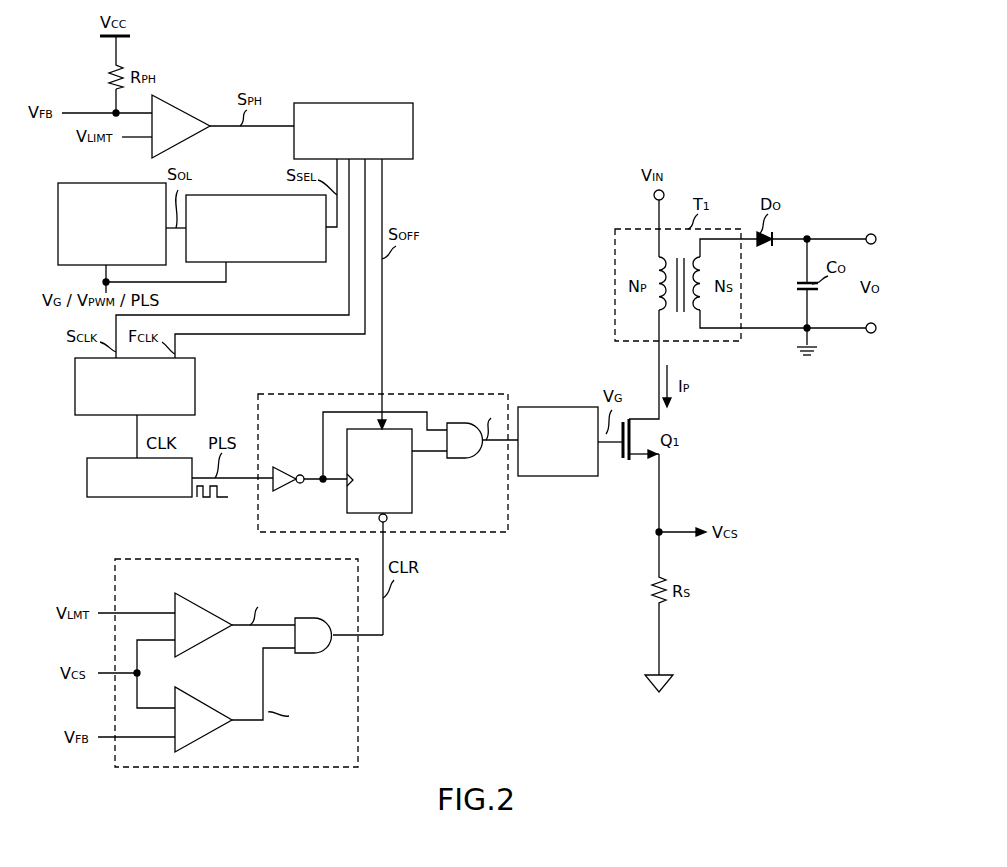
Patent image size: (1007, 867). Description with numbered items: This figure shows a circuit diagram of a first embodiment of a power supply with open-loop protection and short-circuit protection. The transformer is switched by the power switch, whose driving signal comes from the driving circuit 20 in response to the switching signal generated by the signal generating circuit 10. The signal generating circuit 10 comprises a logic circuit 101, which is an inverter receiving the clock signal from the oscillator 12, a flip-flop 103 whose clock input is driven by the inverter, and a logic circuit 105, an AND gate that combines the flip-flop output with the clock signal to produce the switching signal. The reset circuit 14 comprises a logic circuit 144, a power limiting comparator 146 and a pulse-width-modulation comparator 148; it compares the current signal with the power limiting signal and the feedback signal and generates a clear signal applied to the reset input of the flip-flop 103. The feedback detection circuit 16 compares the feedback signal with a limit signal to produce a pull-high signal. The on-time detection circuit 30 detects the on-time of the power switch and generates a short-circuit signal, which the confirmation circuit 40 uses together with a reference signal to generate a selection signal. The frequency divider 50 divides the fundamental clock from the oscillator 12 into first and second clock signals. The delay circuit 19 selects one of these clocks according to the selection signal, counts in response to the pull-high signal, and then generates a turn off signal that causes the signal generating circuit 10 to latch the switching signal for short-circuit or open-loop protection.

The signal generating circuit 10 is at (456, 394).
The oscillator 12 is at (110, 458).
The reset circuit 14 is at (358, 672).
The feedback detection circuit 16 is at (190, 106).
The delay circuit 19 is at (335, 103).
The driving circuit 20 is at (555, 407).
The on-time detection circuit 30 is at (110, 183).
The confirmation circuit 40 is at (226, 195).
The frequency divider 50 is at (195, 378).
The logic circuit 101 is at (286, 468).
The flip-flop 103 is at (412, 490).
The logic circuit 105 is at (468, 456).
The logic circuit 144 is at (308, 618).
The power limiting comparator 146 is at (194, 606).
The pulse-width-modulation comparator 148 is at (194, 701).